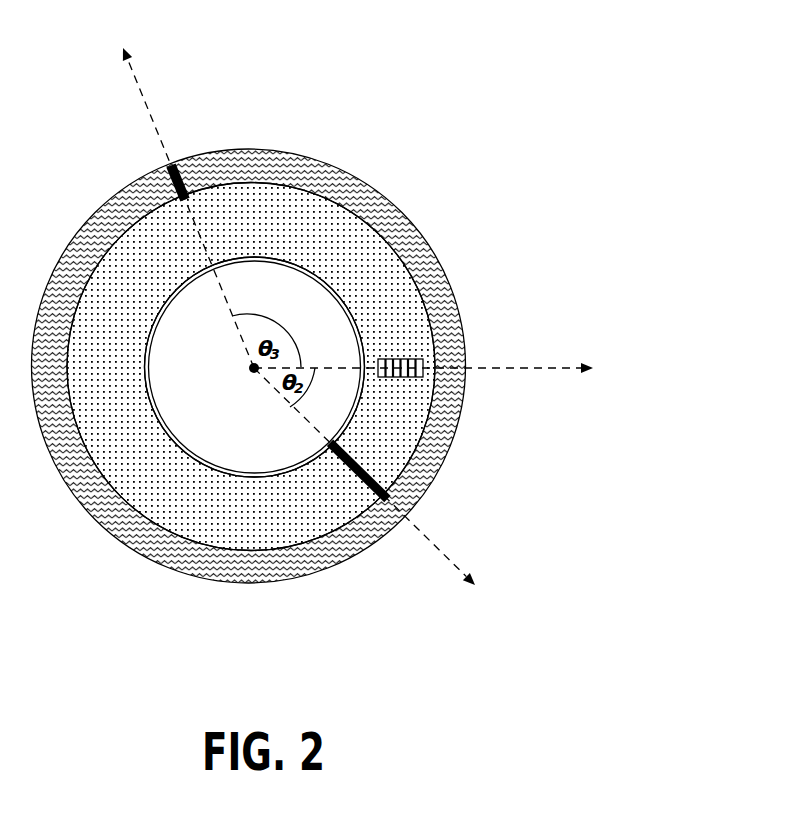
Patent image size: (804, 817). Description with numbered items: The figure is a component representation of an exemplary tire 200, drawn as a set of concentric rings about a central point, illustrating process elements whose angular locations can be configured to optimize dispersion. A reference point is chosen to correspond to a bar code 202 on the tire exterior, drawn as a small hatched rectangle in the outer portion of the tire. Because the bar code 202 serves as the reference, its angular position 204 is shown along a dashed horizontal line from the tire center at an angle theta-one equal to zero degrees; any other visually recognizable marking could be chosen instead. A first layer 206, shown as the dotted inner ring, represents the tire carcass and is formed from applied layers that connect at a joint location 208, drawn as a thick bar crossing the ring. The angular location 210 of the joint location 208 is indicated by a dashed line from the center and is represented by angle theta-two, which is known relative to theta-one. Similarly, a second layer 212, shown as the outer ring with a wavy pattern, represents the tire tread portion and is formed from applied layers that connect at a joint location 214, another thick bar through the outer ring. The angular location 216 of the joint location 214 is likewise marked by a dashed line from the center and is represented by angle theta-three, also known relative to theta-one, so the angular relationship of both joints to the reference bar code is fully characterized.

The tire 200 is at (508, 82).
The bar code 202 is at (423, 362).
The angular position 204 is at (520, 368).
The first layer 206 is at (353, 248).
The joint location 208 is at (363, 493).
The angular location 210 is at (443, 552).
The second layer 212 is at (308, 175).
The joint location 214 is at (190, 163).
The angular location 216 is at (146, 100).